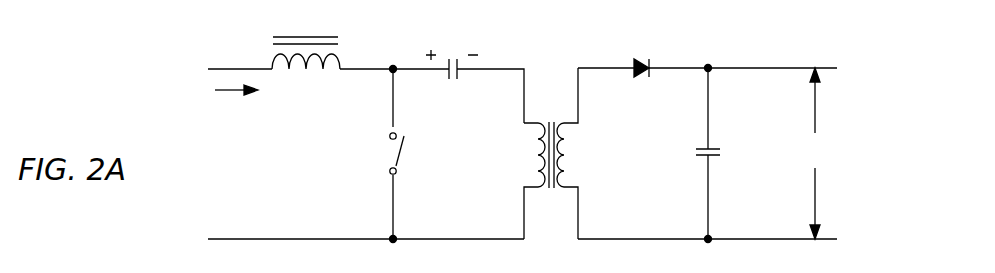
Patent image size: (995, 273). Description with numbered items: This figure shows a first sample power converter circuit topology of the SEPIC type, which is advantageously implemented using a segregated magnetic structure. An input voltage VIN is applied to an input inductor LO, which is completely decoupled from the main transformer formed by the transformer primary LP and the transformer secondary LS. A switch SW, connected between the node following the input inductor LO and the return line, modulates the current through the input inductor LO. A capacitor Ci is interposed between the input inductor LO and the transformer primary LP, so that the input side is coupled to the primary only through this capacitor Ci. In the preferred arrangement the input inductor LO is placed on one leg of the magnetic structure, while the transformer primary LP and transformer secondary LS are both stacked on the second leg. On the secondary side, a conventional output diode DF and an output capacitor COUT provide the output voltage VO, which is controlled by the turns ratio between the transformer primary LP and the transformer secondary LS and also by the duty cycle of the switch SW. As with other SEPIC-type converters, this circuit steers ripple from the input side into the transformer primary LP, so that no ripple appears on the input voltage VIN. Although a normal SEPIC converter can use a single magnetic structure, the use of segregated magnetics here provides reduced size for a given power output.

The input voltage VIN is at (221, 75).
The input inductor LO is at (281, 47).
The capacitor Ci is at (452, 81).
The switch SW is at (413, 154).
The transformer primary LP is at (522, 181).
The transformer secondary LS is at (579, 153).
The output diode DF is at (640, 52).
The output capacitor COUT is at (732, 153).
The output voltage VO is at (816, 153).